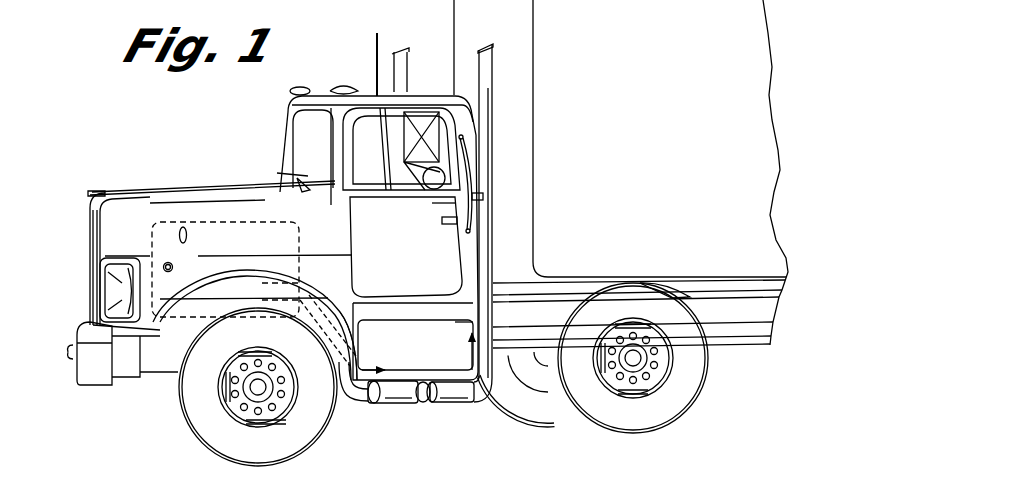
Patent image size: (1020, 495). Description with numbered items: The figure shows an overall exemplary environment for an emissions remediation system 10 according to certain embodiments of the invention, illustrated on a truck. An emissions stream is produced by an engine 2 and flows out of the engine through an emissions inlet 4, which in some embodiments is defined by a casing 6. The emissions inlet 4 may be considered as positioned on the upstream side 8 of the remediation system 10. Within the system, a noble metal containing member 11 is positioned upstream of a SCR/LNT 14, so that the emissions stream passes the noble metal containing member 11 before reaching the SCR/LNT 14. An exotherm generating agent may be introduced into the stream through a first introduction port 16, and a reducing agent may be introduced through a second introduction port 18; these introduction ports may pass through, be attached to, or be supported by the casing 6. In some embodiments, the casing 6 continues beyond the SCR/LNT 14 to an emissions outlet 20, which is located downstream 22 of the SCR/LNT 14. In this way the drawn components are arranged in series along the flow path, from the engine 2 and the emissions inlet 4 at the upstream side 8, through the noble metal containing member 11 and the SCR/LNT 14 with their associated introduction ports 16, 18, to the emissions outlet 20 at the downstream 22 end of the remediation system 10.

The engine 2 is at (225, 297).
The emissions inlet 4 is at (273, 283).
The casing 6 is at (318, 300).
The upstream side 8 is at (336, 368).
The remediation system 10 is at (467, 43).
The noble metal containing member 11 is at (383, 396).
The SCR/LNT 14 is at (450, 396).
The first introduction port 16 is at (352, 401).
The second introduction port 18 is at (423, 394).
The emissions outlet 20 is at (478, 392).
The downstream 22 is at (487, 378).